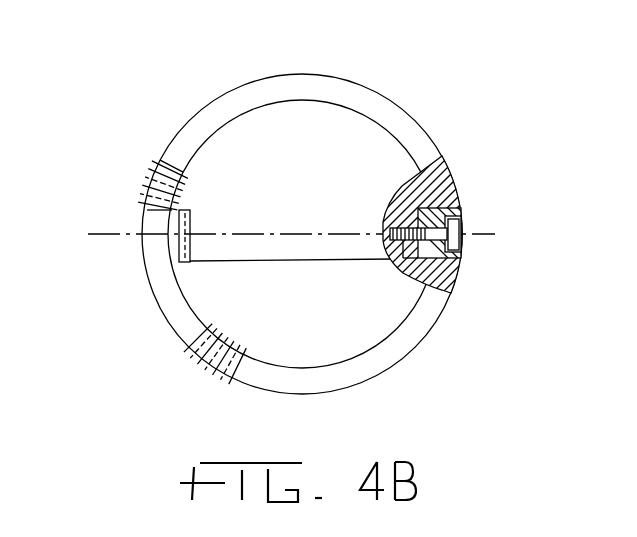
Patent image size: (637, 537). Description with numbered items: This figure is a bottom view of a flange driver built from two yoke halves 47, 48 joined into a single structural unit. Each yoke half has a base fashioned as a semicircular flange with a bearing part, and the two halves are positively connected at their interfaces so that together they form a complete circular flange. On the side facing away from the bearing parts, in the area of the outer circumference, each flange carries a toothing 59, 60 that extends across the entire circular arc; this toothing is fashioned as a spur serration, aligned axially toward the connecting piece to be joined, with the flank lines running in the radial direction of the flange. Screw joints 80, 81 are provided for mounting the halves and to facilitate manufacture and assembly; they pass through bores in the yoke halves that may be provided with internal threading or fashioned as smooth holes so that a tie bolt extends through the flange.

The yoke half 47 is at (362, 96).
The yoke half 48 is at (330, 323).
The toothing 59 is at (222, 378).
The toothing 60 is at (158, 173).
The screw joint 80 is at (103, 234).
The screw joint 81 is at (472, 222).